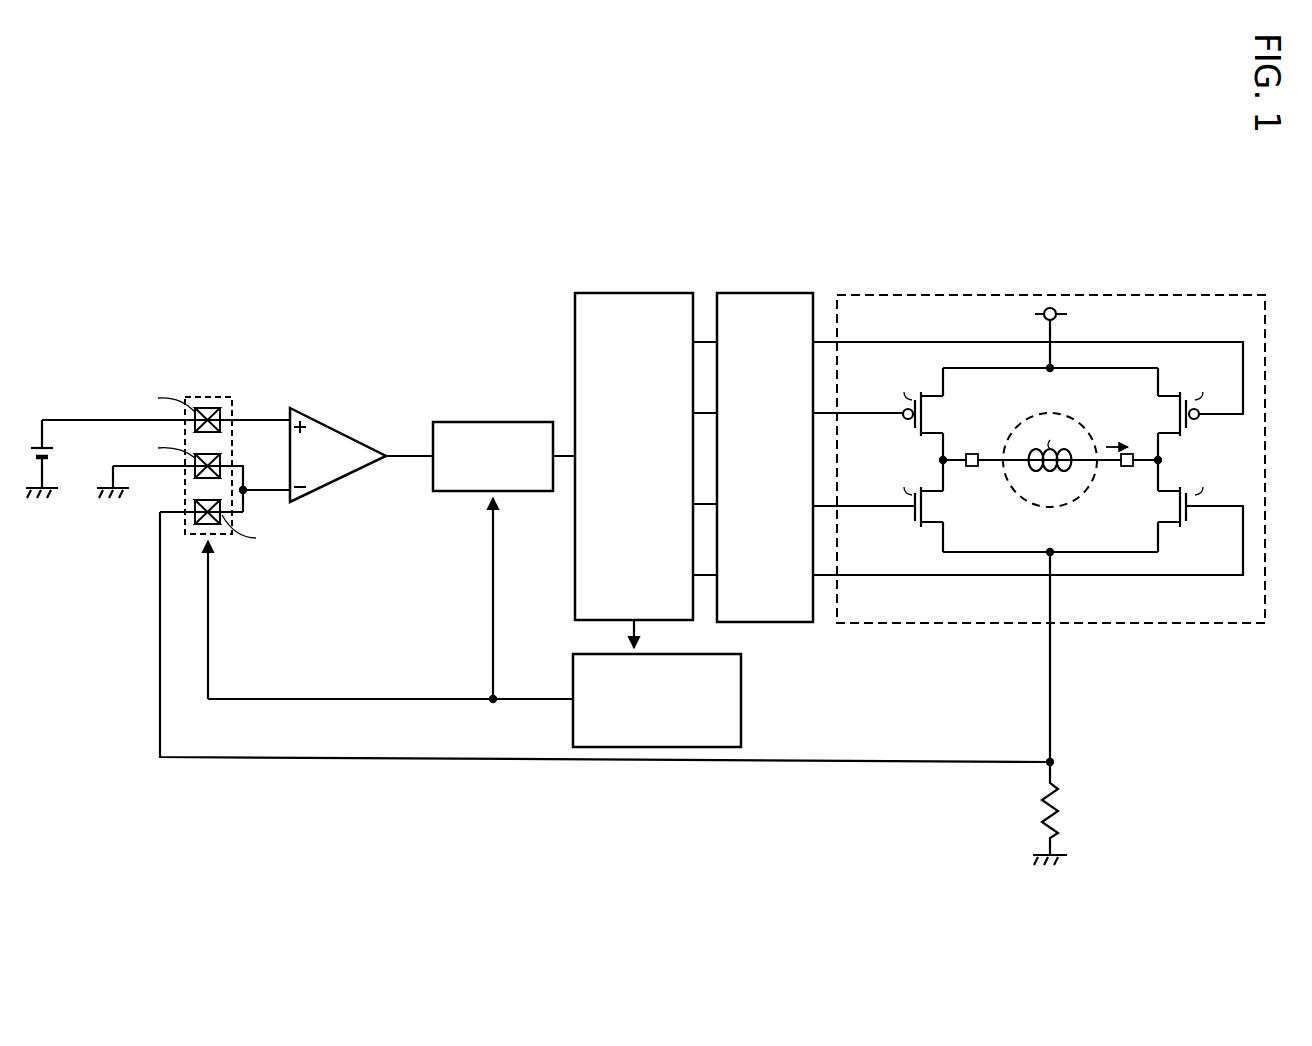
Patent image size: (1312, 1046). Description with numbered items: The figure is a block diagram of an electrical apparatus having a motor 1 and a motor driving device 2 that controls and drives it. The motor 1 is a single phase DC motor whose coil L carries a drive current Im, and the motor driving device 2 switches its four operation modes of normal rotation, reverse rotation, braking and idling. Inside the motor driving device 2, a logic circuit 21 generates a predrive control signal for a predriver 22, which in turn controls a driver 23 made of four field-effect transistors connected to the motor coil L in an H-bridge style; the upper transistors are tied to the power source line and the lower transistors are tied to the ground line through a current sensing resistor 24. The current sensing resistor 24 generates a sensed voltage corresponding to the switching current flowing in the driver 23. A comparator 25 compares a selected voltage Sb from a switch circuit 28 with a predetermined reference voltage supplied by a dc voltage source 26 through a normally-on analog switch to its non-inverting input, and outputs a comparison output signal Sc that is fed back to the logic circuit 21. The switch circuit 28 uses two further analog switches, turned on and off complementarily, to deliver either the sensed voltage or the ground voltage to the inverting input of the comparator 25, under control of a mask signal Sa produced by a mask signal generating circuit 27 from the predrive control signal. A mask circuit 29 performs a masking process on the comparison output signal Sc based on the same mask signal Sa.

The motor 1 is at (1050, 507).
The motor driving device 2 is at (1190, 216).
The logic circuit 21 is at (635, 293).
The predriver 22 is at (766, 293).
The driver 23 is at (1051, 443).
The current sensing resistor 24 is at (1062, 815).
The comparator 25 is at (346, 422).
The dc voltage source 26 is at (56, 452).
The mask signal generating circuit 27 is at (742, 699).
The switch circuit 28 is at (208, 397).
The mask circuit 29 is at (493, 422).